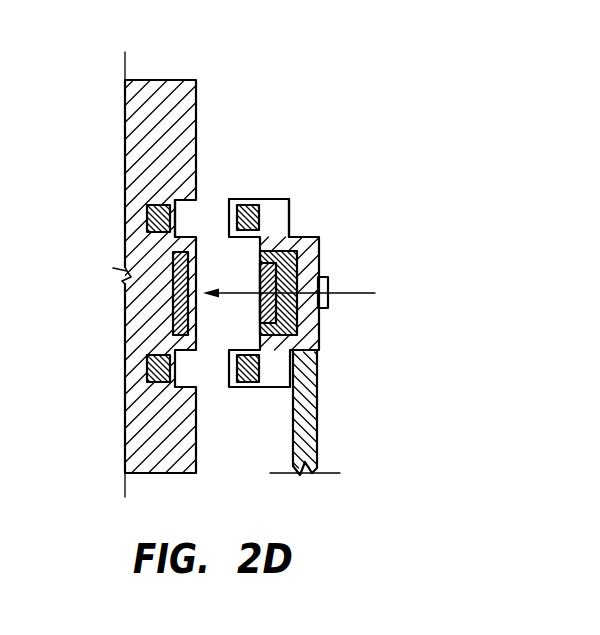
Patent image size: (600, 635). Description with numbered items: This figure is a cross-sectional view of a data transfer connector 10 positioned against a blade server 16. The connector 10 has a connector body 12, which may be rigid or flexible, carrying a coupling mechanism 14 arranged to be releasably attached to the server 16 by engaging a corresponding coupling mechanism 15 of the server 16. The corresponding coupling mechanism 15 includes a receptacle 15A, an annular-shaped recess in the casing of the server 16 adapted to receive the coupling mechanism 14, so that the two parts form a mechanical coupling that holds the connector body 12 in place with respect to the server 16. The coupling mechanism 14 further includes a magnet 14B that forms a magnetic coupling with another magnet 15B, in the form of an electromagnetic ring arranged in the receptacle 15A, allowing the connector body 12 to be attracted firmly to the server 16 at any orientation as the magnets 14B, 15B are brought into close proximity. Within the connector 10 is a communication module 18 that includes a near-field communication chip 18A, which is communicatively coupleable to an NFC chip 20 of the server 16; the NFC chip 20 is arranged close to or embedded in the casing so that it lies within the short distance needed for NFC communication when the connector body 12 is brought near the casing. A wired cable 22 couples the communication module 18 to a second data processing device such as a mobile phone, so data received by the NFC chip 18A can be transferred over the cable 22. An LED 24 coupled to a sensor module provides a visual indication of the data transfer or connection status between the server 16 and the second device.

The data transfer connector 10 is at (372, 153).
The connector body 12 is at (290, 207).
The coupling mechanism 14 is at (265, 147).
The magnet 14B is at (254, 204).
The corresponding coupling mechanism 15 is at (208, 160).
The receptacle 15A is at (182, 218).
The magnet 15B is at (147, 217).
The blade server 16 is at (158, 80).
The communication module 18 is at (300, 328).
The near-field communication chip 18A is at (298, 270).
The NFC chip 20 is at (173, 300).
The wired cable 22 is at (318, 418).
The LED 24 is at (328, 290).